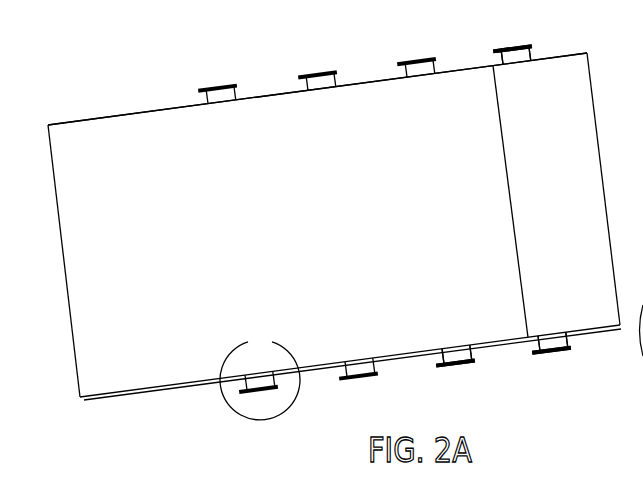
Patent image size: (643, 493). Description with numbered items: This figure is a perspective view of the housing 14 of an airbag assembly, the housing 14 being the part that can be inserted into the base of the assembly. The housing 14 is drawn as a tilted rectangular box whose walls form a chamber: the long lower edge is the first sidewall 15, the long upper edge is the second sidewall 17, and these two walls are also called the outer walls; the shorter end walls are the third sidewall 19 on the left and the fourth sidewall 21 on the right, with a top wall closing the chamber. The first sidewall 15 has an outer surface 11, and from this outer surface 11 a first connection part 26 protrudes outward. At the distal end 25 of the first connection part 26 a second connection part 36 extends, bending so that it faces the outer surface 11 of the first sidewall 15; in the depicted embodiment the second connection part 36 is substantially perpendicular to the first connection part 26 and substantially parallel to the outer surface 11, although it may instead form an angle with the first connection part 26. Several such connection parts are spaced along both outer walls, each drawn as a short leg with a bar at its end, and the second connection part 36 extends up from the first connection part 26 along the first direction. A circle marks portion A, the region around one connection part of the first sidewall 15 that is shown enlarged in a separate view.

The outer surface 11 is at (331, 247).
The housing 14 is at (179, 93).
The first sidewall 15 is at (121, 402).
The second sidewall 17 is at (125, 111).
The third sidewall 19 is at (66, 283).
The fourth sidewall 21 is at (597, 117).
The distal end 25 is at (470, 363).
The first connection part 26 is at (533, 52).
The second connection part 36 is at (509, 43).
The portion A is at (260, 374).